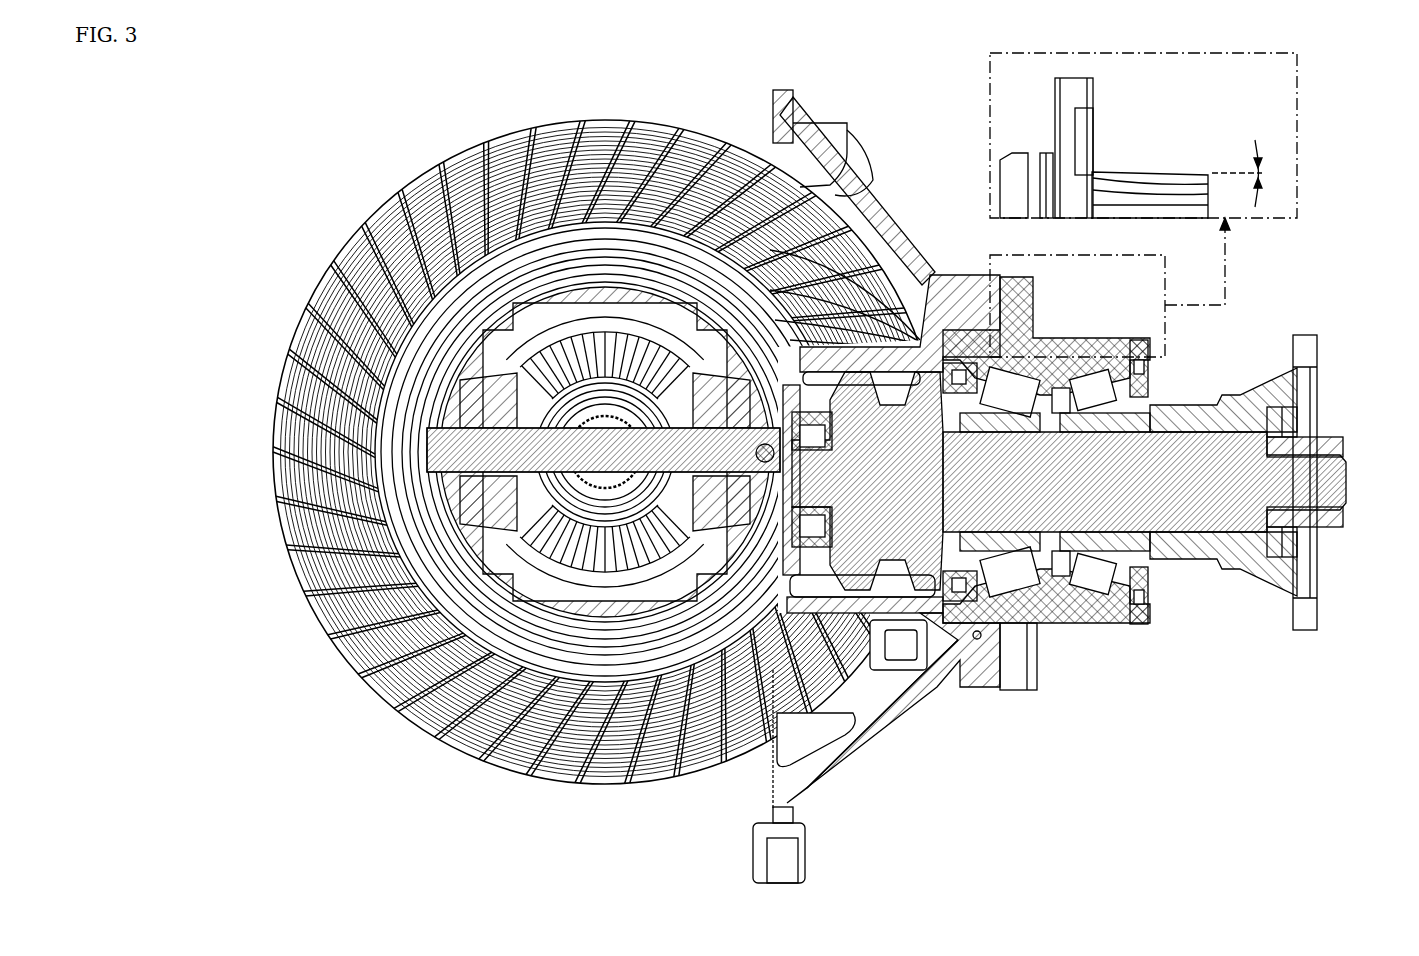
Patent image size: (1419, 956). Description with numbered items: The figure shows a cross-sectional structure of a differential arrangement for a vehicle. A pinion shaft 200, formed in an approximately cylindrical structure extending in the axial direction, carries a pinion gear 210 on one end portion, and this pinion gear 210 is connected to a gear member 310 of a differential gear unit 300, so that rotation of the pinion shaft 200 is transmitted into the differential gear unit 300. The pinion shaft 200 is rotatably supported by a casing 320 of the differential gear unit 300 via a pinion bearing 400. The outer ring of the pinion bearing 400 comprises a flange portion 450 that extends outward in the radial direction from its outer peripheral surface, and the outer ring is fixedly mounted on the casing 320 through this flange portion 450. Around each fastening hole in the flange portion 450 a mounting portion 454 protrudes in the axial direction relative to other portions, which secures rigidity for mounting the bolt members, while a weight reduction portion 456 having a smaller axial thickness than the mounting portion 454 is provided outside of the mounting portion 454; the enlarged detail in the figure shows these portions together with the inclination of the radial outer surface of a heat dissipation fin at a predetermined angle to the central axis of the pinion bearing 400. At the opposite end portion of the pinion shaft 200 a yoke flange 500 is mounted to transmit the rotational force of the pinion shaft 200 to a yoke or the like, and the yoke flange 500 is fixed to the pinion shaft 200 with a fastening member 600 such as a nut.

The pinion shaft 200 is at (1020, 660).
The pinion gear 210 is at (867, 653).
The differential gear unit 300 is at (385, 730).
The gear member 310 is at (560, 783).
The casing 320 is at (873, 180).
The pinion bearing 400 is at (1131, 647).
The flange portion 450 is at (1055, 135).
The mounting portion 454 is at (1095, 95).
The weight reduction portion 456 is at (1093, 162).
The yoke flange 500 is at (1243, 392).
The fastening member 600 is at (1320, 447).